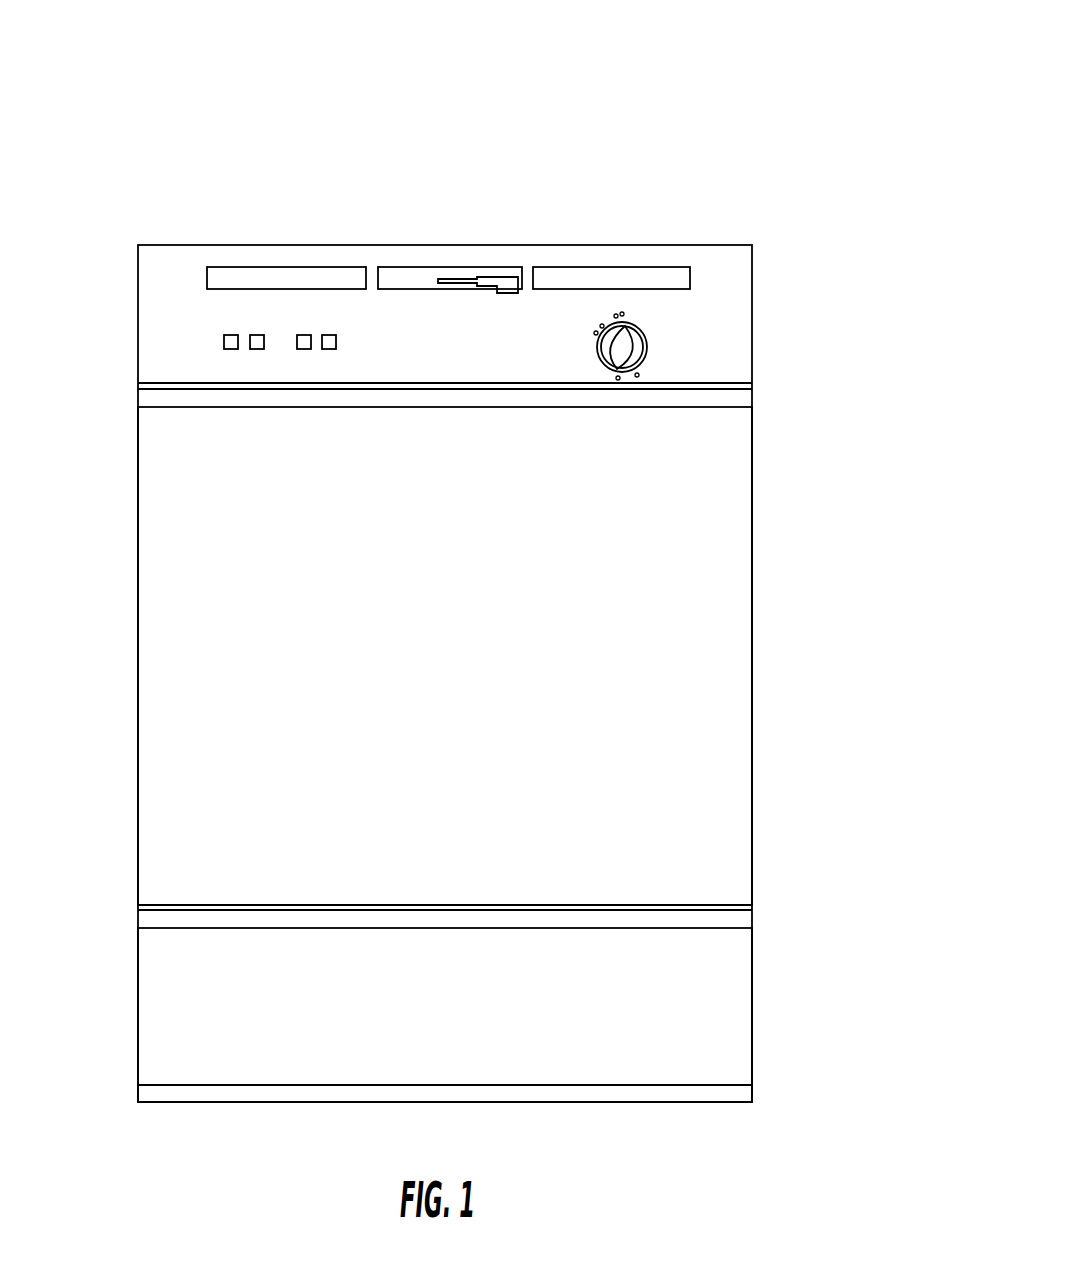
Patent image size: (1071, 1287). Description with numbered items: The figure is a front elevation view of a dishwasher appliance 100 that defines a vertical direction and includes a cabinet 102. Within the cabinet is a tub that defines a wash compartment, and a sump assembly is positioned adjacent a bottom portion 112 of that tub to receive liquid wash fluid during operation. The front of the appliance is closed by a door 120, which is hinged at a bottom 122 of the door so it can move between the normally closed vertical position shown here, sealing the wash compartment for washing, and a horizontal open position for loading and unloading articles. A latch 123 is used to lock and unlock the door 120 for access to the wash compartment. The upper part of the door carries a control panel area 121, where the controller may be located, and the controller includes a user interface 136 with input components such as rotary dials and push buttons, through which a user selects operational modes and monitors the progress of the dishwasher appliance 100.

The dishwasher appliance 100 is at (680, 95).
The cabinet 102 is at (760, 1000).
The bottom portion 112 is at (130, 1093).
The door 120 is at (710, 632).
The control panel area 121 is at (728, 271).
The bottom 122 is at (760, 893).
The latch 123 is at (504, 285).
The user interface 136 is at (304, 335).